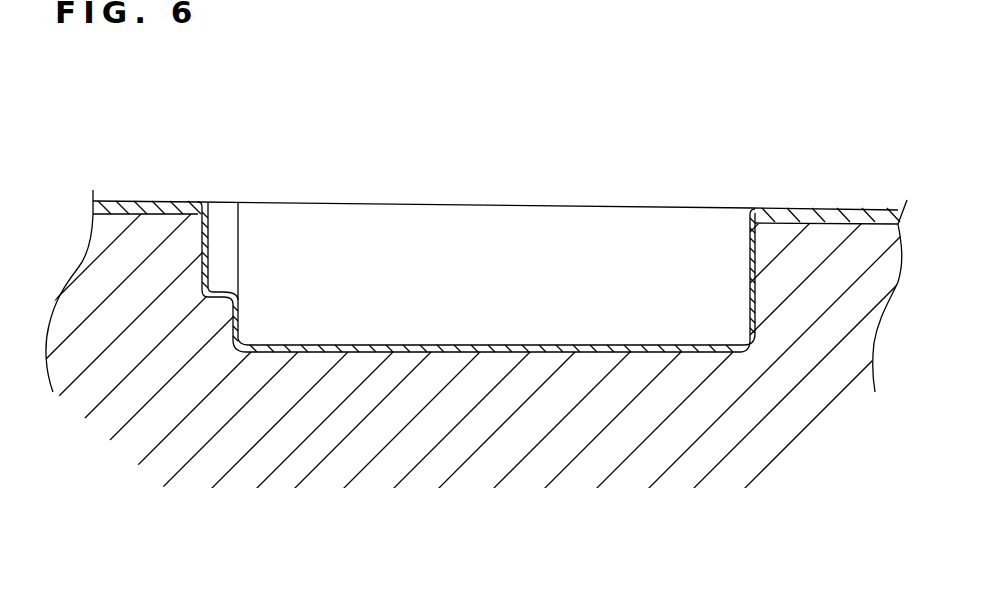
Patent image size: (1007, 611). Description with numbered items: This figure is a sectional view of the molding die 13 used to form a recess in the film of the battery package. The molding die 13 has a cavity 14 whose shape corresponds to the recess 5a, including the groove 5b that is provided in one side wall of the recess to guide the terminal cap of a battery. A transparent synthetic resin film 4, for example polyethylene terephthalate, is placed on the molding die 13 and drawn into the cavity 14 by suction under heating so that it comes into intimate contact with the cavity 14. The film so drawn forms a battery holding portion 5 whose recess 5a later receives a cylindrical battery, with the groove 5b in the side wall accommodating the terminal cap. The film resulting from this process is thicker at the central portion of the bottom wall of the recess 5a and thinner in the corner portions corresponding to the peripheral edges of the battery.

The transparent synthetic resin film 4 is at (822, 213).
The battery holding portion 5 is at (340, 357).
The recess 5a is at (400, 298).
The groove 5b is at (225, 225).
The molding die 13 is at (658, 412).
The cavity 14 is at (548, 440).